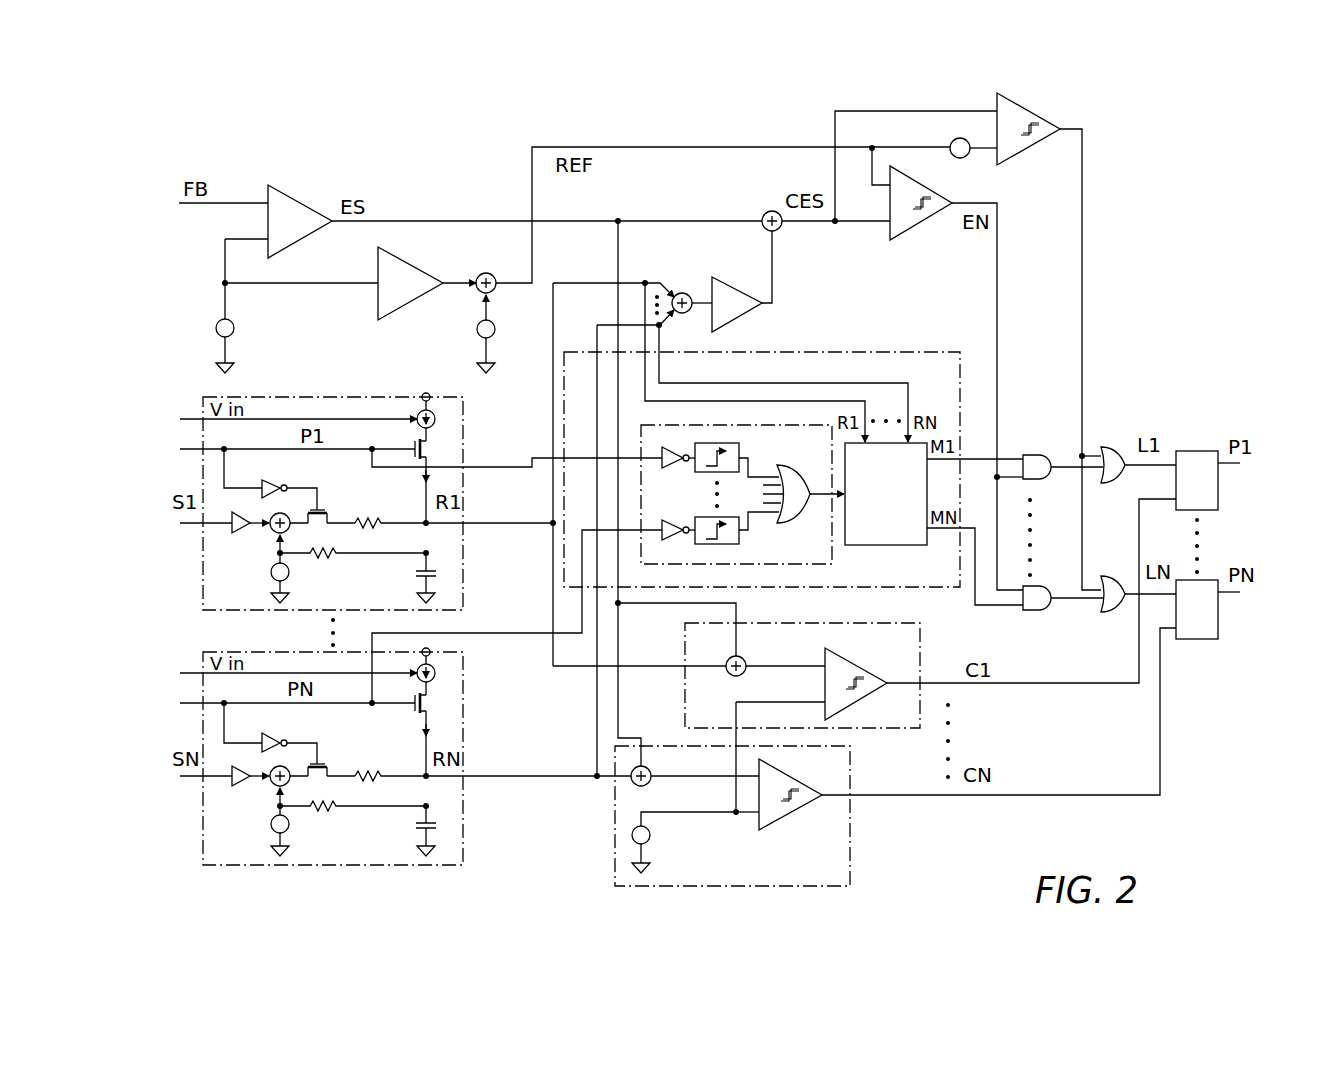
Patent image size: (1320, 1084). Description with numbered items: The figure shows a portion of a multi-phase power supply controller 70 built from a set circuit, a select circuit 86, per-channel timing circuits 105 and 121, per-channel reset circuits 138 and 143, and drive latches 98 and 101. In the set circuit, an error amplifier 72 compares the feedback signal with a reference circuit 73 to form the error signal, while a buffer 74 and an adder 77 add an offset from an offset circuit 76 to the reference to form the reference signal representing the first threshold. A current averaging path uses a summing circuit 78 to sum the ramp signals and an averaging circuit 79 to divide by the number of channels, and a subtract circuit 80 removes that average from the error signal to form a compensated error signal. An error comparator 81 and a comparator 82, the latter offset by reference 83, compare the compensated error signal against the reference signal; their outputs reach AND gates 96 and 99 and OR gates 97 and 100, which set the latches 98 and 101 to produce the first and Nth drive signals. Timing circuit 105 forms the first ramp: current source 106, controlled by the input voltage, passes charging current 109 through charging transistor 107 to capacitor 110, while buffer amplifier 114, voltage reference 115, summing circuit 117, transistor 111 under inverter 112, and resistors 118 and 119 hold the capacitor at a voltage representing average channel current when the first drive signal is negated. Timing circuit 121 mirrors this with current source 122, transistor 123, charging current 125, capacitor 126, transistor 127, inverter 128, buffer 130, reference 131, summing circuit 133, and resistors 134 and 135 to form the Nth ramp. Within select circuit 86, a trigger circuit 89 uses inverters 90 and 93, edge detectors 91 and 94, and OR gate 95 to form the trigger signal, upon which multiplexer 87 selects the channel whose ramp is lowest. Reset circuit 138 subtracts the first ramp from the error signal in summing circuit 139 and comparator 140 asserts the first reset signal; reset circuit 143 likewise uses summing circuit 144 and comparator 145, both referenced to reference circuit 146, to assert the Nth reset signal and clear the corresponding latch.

The multi-phase power supply controller 70 is at (963, 889).
The error amplifier 72 is at (286, 192).
The reference circuit 73 is at (216, 326).
The buffer amplifier 74 is at (422, 302).
The offset circuit 76 is at (500, 330).
The adder circuit 77 is at (494, 276).
The summing circuit 78 is at (680, 292).
The averaging circuit 79 is at (748, 312).
The subtract circuit 80 is at (768, 210).
The error comparator 81 is at (930, 220).
The comparator 82 is at (1033, 107).
The reference 83 is at (960, 158).
The select circuit 86 is at (860, 352).
The multiplexer 87 is at (905, 545).
The trigger circuit 89 is at (725, 564).
The inverter 90 is at (668, 469).
The edge detector 91 is at (739, 453).
The inverter 93 is at (670, 541).
The edge detector 94 is at (740, 542).
The OR gate 95 is at (790, 468).
The AND gate 96 is at (1030, 455).
The OR gate 97 is at (1105, 447).
The drive latch 98 is at (1192, 451).
The AND gate 99 is at (1045, 588).
The OR gate 100 is at (1110, 578).
The drive latch 101 is at (1197, 639).
The timing circuit 105 is at (308, 397).
The current source 106 is at (440, 419).
The charging transistor 107 is at (438, 450).
The charging current 109 is at (420, 487).
The capacitor 110 is at (420, 580).
The transistor 111 is at (318, 502).
The inverter 112 is at (275, 479).
The buffer amplifier 114 is at (244, 533).
The voltage reference 115 is at (290, 576).
The summing circuit 117 is at (270, 536).
The resistor 118 is at (326, 560).
The resistor 119 is at (370, 526).
The timing circuit 121 is at (465, 748).
The current source 122 is at (440, 678).
The charging transistor 123 is at (438, 703).
The charging current 125 is at (420, 727).
The capacitor 126 is at (440, 832).
The transistor 127 is at (322, 756).
The inverter 128 is at (272, 733).
The buffer 130 is at (246, 787).
The reference circuit 131 is at (291, 828).
The summing circuit 133 is at (294, 780).
The resistor 134 is at (326, 814).
The resistor 135 is at (370, 779).
The reset circuit 138 is at (815, 623).
The summing circuit 139 is at (746, 660).
The comparator 140 is at (870, 672).
The reset circuit 143 is at (850, 865).
The summing circuit 144 is at (647, 783).
The comparator 145 is at (802, 803).
The reference circuit 146 is at (650, 837).